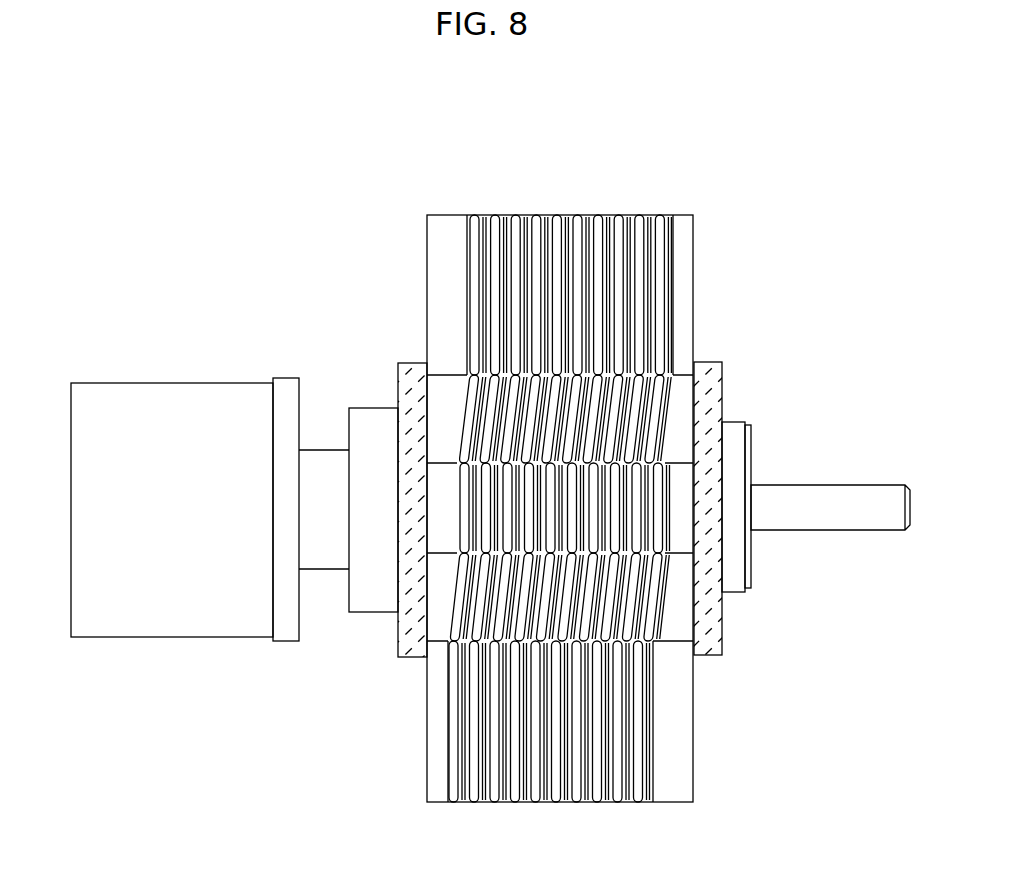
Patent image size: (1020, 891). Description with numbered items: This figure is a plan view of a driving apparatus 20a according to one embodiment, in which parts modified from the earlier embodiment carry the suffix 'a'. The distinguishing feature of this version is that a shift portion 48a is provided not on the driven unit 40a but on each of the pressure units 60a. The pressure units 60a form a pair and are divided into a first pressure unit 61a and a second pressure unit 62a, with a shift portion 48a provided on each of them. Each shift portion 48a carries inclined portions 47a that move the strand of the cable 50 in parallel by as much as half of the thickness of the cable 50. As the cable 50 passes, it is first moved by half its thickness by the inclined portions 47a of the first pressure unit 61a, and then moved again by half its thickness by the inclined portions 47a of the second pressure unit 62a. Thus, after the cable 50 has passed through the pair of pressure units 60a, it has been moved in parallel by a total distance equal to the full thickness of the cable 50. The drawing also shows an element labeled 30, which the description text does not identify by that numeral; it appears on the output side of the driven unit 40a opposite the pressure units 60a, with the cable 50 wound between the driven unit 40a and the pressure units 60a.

The driving apparatus 20a is at (447, 124).
The output shaft 30 is at (702, 540).
The driven unit 40a is at (705, 222).
The inclined portions 47a is at (634, 406).
The shift portion 48a is at (680, 423).
The cable 50 is at (667, 214).
The pressure units 60a is at (368, 275).
The first pressure unit 61a is at (448, 392).
The second pressure unit 62a is at (430, 580).